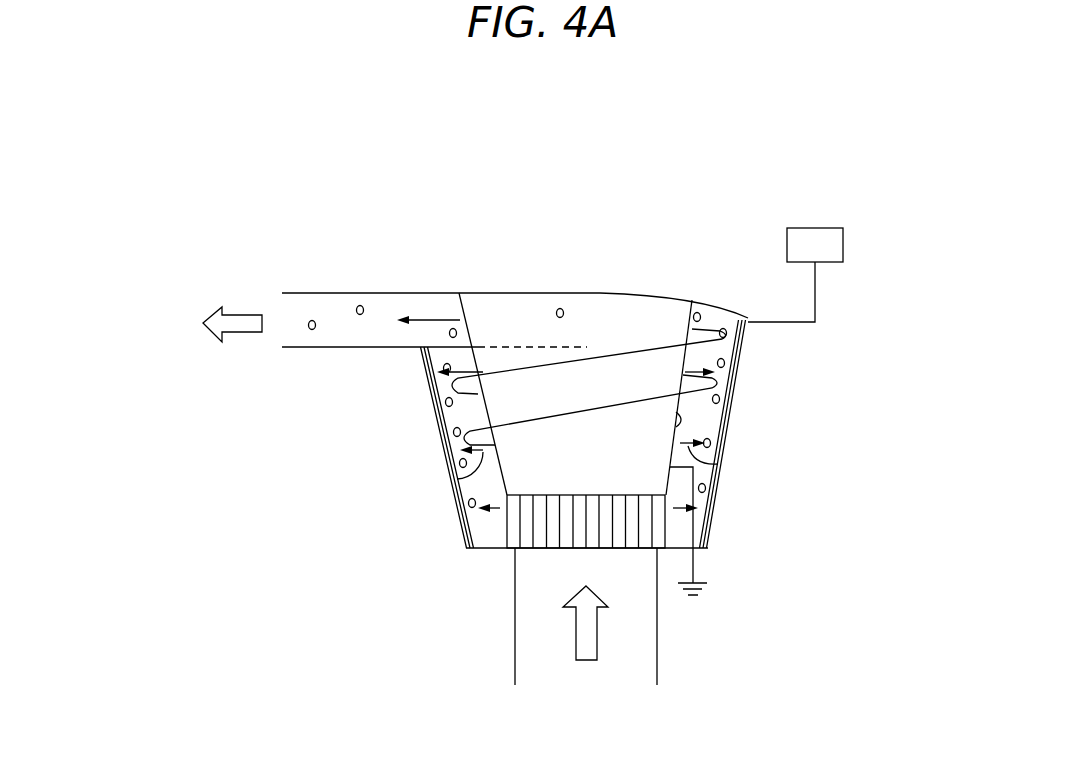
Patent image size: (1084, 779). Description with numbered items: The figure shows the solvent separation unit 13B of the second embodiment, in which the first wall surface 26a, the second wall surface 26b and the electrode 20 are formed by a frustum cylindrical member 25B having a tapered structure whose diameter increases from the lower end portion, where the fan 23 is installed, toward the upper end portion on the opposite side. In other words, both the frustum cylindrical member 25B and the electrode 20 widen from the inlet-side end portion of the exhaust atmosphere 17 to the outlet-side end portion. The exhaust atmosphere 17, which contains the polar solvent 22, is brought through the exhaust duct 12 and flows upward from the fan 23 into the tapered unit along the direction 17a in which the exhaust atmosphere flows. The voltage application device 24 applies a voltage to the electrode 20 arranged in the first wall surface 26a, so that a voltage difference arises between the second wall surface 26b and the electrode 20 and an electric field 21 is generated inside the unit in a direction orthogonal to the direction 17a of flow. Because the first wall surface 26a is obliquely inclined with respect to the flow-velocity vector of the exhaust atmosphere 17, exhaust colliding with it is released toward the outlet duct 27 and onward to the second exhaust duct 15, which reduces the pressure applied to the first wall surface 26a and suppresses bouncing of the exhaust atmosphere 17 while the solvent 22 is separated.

The exhaust duct 12 is at (657, 648).
The solvent separation unit 13B is at (660, 283).
The second exhaust duct 15 is at (305, 302).
The exhaust atmosphere 17 is at (587, 662).
The direction in which the exhaust atmosphere flows 17a is at (632, 402).
The electrode 20 is at (435, 426).
The electric field 21 is at (453, 481).
The solvent 22 is at (315, 320).
The fan 23 is at (527, 528).
The voltage application device 24 is at (815, 228).
The frustum cylindrical member 25B is at (730, 502).
The first wall surface 26a is at (428, 371).
The second wall surface 26b is at (673, 433).
The outlet duct 27 is at (430, 303).